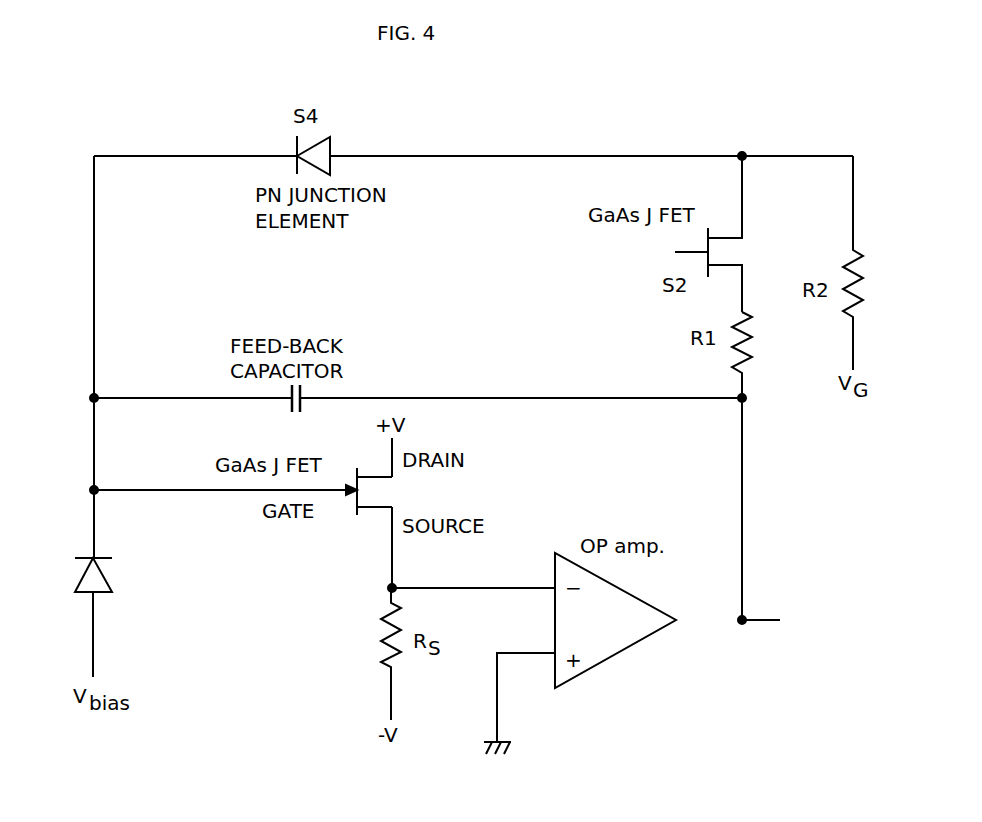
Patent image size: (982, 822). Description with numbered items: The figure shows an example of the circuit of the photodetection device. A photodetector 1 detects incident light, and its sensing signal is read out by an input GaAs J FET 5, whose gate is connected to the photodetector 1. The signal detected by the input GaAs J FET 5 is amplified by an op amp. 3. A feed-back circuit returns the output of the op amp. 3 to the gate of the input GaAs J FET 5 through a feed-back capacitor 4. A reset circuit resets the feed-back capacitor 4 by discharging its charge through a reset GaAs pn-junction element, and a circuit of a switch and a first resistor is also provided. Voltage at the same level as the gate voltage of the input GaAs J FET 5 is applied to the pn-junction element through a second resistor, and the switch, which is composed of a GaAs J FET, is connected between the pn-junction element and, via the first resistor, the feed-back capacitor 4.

The photodetector 1 is at (113, 577).
The op amp. 3 is at (647, 600).
The feed-back capacitor 4 is at (292, 405).
The input GaAs J FET 5 is at (356, 517).